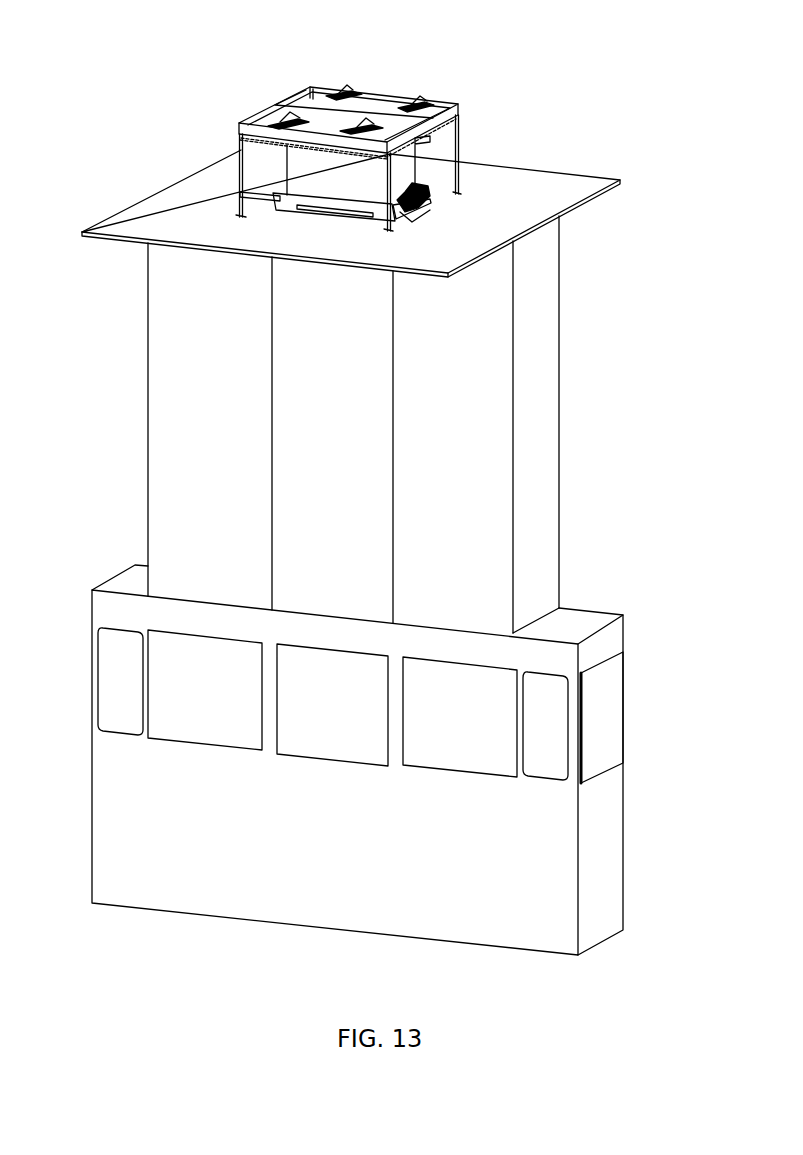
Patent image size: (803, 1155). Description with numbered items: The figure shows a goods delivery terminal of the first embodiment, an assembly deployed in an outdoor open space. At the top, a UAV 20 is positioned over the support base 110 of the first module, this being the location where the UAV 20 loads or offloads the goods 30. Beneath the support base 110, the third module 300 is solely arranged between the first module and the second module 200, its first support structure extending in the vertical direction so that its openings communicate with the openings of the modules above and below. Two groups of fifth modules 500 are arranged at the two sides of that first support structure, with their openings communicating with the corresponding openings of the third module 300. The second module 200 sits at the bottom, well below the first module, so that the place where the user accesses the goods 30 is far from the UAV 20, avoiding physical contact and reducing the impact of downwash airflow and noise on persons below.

The UAV 20 is at (447, 98).
The goods 30 is at (293, 164).
The support base 110 is at (543, 182).
The fifth module 500 is at (170, 360).
The third module 300 is at (353, 521).
The second module 200 is at (612, 877).